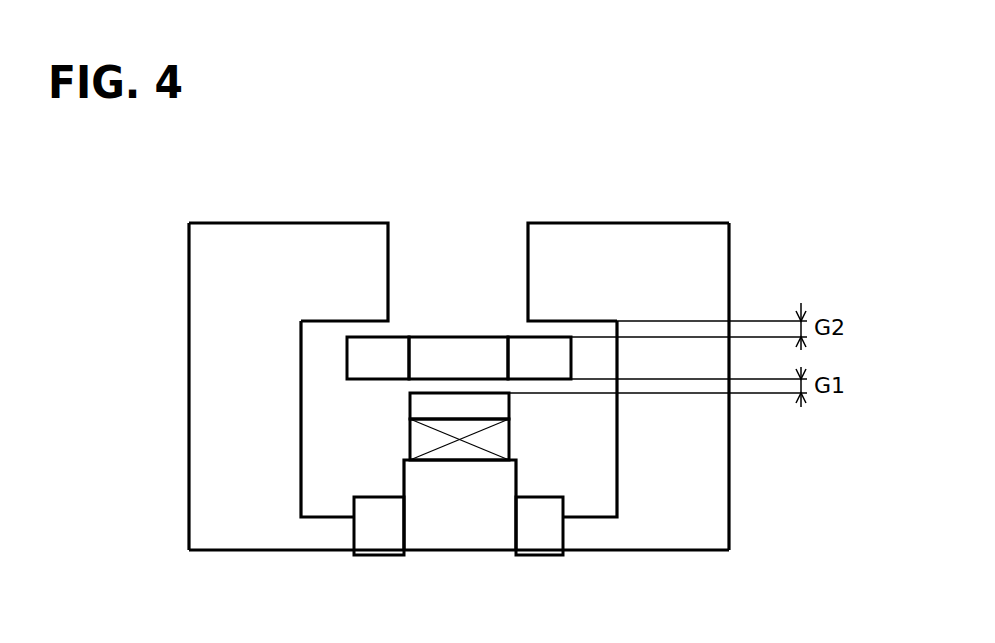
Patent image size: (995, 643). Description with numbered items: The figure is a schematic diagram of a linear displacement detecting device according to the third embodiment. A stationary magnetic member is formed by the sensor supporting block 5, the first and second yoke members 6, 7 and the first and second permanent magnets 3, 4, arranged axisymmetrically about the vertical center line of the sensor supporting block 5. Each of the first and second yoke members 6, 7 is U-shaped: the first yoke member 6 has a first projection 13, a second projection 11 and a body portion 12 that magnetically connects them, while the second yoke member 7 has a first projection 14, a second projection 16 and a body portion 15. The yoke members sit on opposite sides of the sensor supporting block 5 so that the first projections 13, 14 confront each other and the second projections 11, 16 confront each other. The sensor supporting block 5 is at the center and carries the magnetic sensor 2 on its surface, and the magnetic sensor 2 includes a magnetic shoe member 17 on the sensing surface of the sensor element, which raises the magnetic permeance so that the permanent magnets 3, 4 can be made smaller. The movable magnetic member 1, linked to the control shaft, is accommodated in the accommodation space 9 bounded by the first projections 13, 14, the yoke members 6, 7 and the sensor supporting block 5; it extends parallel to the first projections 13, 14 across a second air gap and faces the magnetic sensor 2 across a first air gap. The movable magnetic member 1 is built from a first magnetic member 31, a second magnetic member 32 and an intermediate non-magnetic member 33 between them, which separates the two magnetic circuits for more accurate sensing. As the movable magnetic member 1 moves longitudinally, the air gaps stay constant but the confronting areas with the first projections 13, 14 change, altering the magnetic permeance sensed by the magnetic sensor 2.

The movable magnetic member 1 is at (461, 278).
The magnetic sensor 2 is at (453, 450).
The first permanent magnet 3 is at (380, 548).
The second permanent magnet 4 is at (540, 548).
The sensor supporting block 5 is at (483, 535).
The first yoke member 6 is at (250, 390).
The second yoke member 7 is at (658, 381).
The accommodation space 9 is at (352, 463).
The second projection 11 is at (328, 537).
The body portion 12 is at (197, 411).
The first projection 13 is at (340, 238).
The first projection 14 is at (550, 262).
The body portion 15 is at (720, 432).
The second projection 16 is at (598, 537).
The magnetic shoe member 17 is at (497, 407).
The first magnetic member 31 is at (352, 357).
The second magnetic member 32 is at (570, 357).
The intermediate non-magnetic member 33 is at (466, 345).